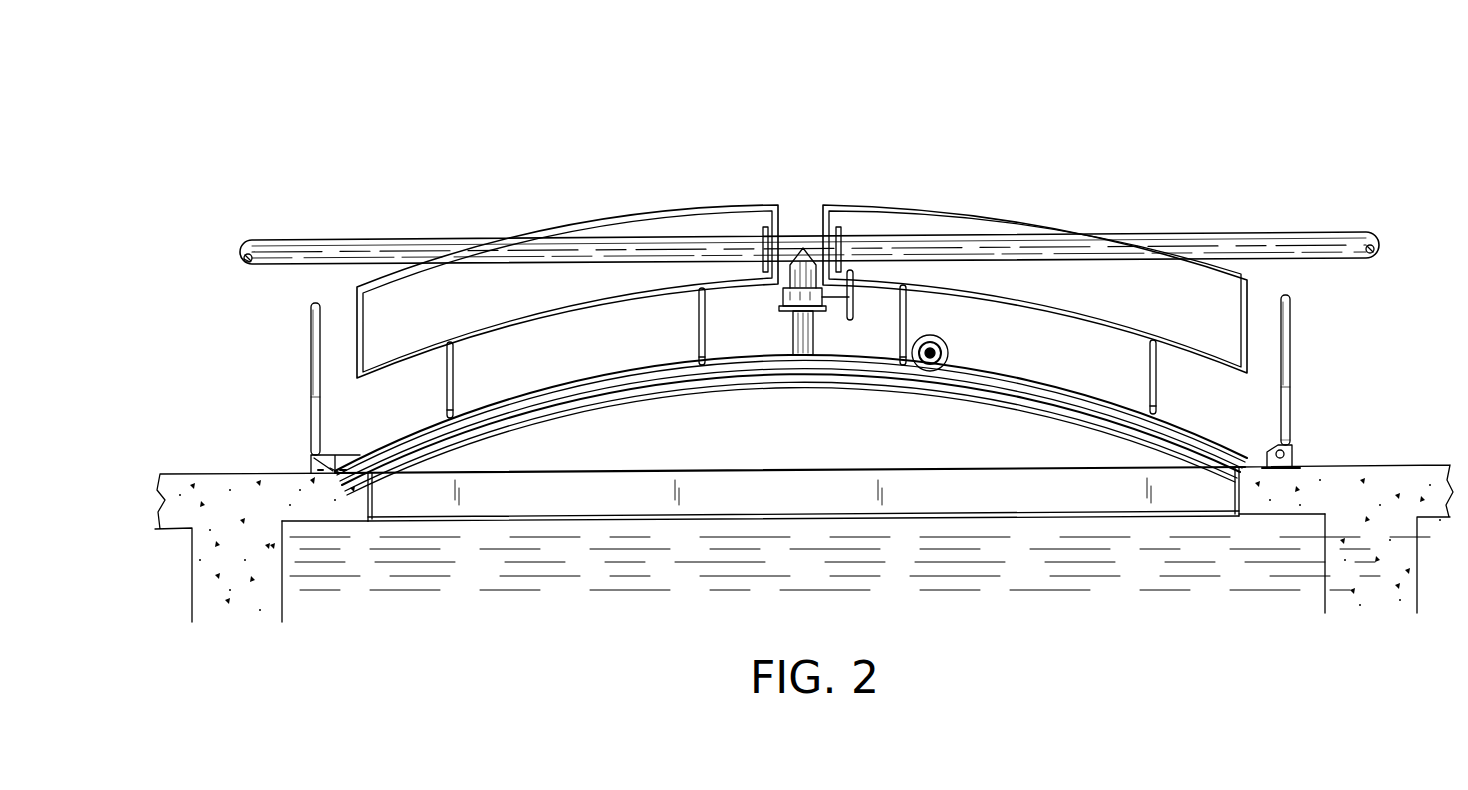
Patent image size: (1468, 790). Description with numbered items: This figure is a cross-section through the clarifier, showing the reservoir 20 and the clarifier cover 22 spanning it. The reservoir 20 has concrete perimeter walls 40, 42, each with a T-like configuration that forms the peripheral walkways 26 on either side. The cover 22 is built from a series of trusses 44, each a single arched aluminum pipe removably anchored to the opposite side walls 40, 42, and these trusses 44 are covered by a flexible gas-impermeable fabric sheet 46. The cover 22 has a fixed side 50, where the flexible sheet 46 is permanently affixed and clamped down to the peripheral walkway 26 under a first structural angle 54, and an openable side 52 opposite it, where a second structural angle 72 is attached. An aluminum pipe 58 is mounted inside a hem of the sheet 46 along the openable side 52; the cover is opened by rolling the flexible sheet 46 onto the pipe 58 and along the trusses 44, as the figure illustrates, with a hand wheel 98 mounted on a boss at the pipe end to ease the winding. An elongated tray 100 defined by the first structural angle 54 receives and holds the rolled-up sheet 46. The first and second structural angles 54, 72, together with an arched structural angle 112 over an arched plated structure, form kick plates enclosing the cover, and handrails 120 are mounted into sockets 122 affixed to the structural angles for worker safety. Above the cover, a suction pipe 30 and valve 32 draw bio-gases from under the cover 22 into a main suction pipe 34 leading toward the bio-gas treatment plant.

The reservoir 20 is at (818, 446).
The clarifier cover 22 is at (367, 148).
The peripheral walkway 26 is at (226, 473).
The suction pipe 30 is at (790, 335).
The valve 32 is at (858, 266).
The main suction pipe 34 is at (1222, 233).
The concrete perimeter wall 40 is at (282, 562).
The concrete perimeter wall 42 is at (1325, 565).
The truss 44 is at (972, 398).
The flexible sheet 46 is at (580, 386).
The fixed side 50 is at (295, 392).
The openable side 52 is at (1338, 392).
The first structural angle 54 is at (313, 462).
The pipe 58 is at (950, 357).
The second structural angle 72 is at (1296, 452).
The hand wheel 98 is at (940, 318).
The elongated tray 100 is at (333, 470).
The arched structural angle 112 is at (1116, 399).
The handrail 120 is at (678, 212).
The socket 122 is at (1163, 412).